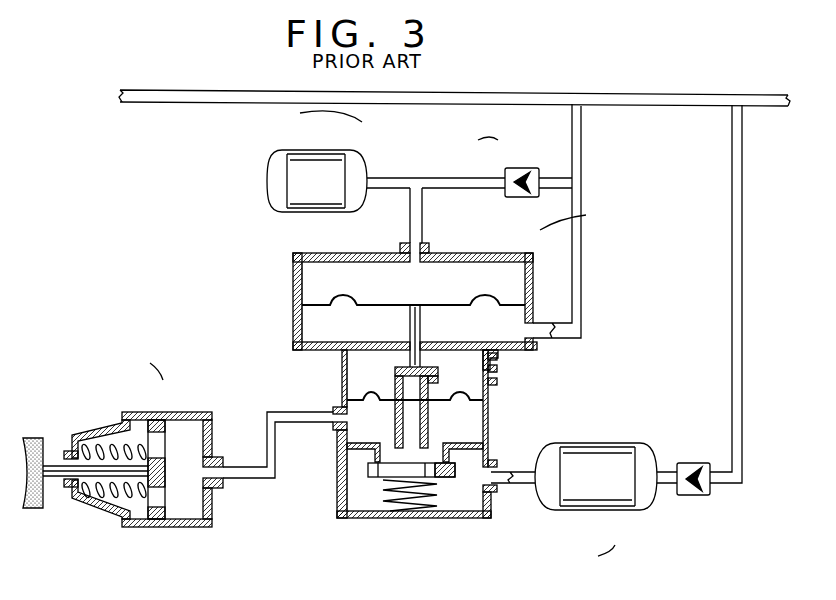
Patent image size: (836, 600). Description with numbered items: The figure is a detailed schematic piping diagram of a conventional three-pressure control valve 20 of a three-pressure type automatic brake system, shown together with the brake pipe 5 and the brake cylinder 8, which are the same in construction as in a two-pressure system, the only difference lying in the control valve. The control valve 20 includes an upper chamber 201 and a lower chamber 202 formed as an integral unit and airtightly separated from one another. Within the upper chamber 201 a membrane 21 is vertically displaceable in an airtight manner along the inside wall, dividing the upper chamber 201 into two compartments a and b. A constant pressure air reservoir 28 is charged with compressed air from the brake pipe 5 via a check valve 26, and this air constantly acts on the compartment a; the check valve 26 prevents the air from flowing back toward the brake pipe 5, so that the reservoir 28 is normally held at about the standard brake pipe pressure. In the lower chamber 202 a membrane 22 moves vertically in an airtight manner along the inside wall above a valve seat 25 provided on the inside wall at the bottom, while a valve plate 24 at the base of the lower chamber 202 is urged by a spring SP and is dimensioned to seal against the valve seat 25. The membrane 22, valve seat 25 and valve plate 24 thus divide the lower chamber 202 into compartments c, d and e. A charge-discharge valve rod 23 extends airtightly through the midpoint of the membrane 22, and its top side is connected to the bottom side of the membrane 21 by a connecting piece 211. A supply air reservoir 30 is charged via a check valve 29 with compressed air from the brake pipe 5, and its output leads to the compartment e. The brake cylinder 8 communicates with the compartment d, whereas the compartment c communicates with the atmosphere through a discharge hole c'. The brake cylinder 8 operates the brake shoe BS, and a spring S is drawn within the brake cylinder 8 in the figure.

The brake pipe 5 is at (535, 92).
The constant pressure air reservoir 28 is at (338, 150).
The check valve 26 is at (530, 168).
The three-pressure control valve 20 is at (471, 288).
The upper chamber 201 is at (482, 235).
The membrane 21 is at (466, 305).
The connecting piece 211 is at (420, 325).
The charge-discharge valve rod 23 is at (396, 372).
The membrane 22 is at (485, 405).
The lower chamber 202 is at (433, 451).
The valve seat 25 is at (370, 462).
The valve plate 24 is at (445, 480).
The spring SP is at (388, 500).
The brake cylinder 8 is at (123, 446).
The brake shoe BS is at (38, 510).
The brake cylinder return spring S is at (120, 492).
The supply air reservoir 30 is at (608, 510).
The check valve 29 is at (684, 495).
The compartment a is at (310, 286).
The compartment b is at (310, 323).
The compartment c is at (333, 375).
The discharge hole c' is at (508, 373).
The compartment d is at (360, 411).
The compartment e is at (358, 488).